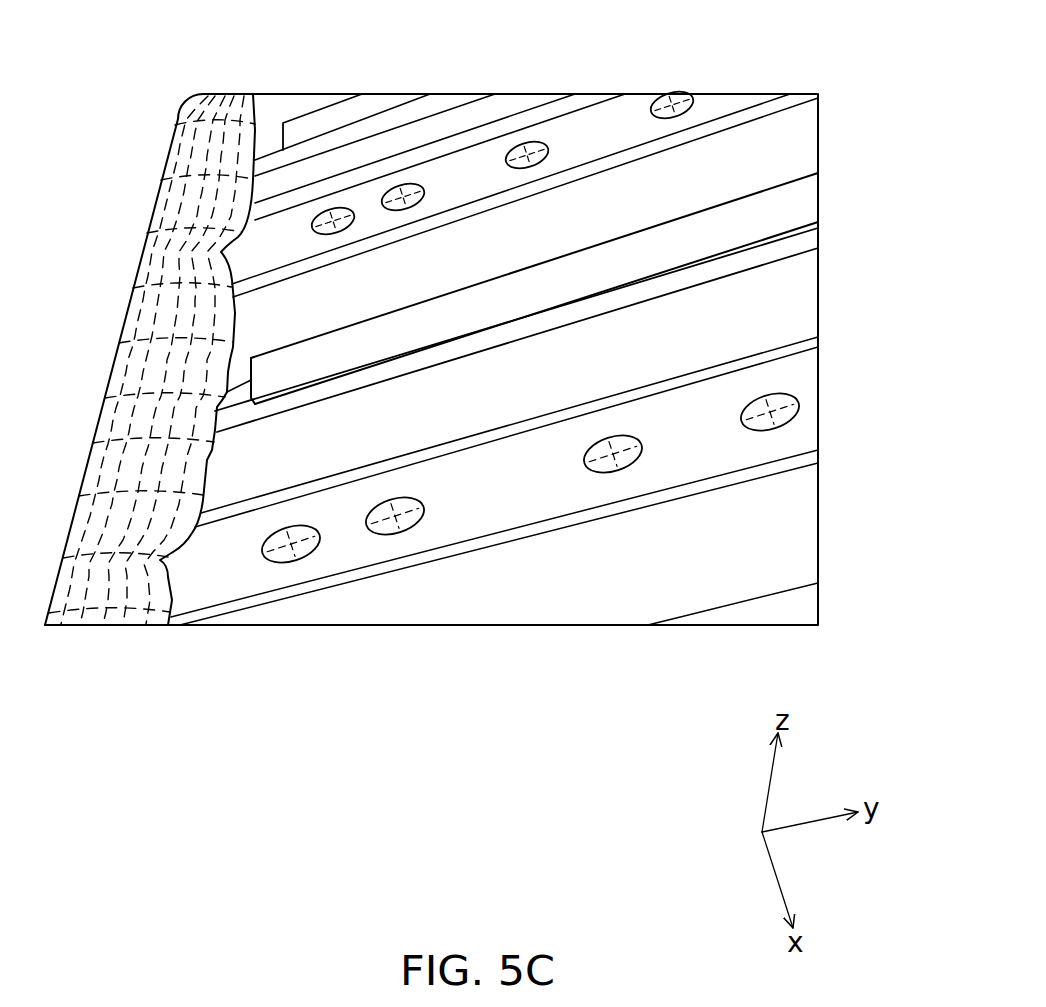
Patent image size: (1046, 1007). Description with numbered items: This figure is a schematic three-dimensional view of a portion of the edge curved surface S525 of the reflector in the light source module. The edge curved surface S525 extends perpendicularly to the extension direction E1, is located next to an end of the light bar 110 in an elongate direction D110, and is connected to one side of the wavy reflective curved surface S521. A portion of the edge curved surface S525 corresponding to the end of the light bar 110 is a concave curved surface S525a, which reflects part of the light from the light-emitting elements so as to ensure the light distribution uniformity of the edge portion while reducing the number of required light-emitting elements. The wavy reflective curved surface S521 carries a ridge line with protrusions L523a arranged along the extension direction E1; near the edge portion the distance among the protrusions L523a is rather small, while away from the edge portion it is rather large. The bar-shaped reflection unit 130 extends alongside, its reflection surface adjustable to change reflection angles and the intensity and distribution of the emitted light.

The light bar 110 is at (783, 248).
The bar-shaped reflection unit 130 is at (773, 195).
The wavy reflective curved surface S521 is at (753, 318).
The protrusions L523a is at (785, 398).
The edge curved surface S525 is at (237, 168).
The concave curved surface S525a is at (188, 358).
The elongate direction D110 is at (825, 222).
The extension direction E1 is at (577, 670).